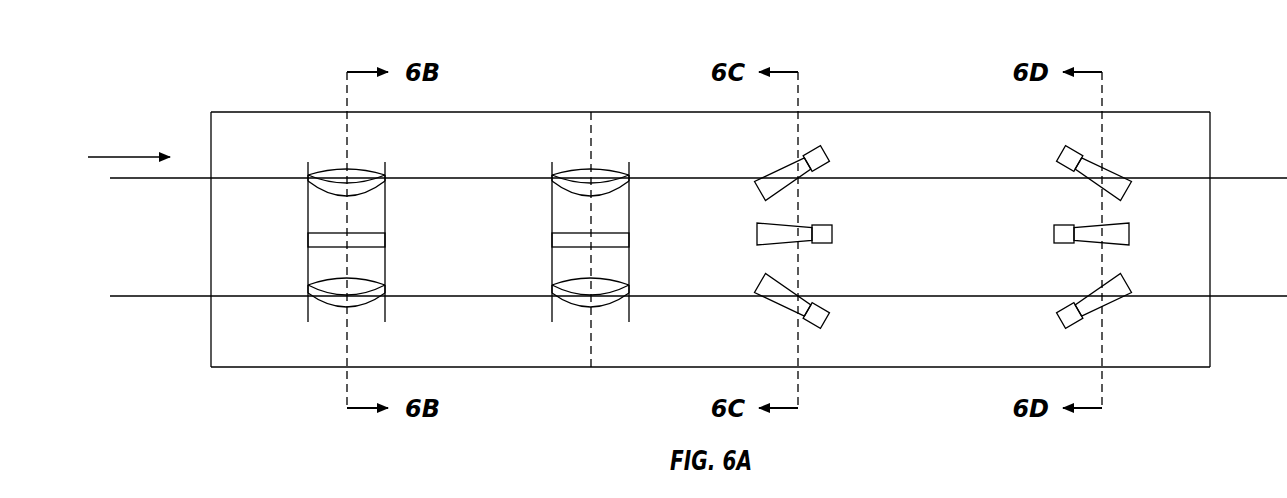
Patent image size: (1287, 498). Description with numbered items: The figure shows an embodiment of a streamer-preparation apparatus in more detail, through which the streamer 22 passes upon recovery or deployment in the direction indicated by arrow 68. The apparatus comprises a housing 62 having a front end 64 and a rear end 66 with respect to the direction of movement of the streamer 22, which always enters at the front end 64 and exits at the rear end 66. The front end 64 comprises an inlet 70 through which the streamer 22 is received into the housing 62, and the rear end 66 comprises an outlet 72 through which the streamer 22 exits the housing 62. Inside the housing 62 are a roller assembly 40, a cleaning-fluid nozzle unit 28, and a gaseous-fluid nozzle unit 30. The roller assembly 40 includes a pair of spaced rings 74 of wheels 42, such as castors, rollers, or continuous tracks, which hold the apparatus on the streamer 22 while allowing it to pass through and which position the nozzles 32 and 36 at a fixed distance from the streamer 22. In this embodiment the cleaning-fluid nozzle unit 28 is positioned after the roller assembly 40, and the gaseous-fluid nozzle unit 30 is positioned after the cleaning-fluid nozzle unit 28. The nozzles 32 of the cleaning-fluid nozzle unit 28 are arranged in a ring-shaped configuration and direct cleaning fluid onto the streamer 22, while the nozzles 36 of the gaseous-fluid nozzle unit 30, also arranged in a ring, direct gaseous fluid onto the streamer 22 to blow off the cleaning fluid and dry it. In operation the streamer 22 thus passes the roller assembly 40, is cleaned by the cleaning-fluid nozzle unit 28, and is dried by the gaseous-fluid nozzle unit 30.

The streamer 22 is at (158, 298).
The cleaning-fluid nozzle unit 28 is at (811, 206).
The gaseous-fluid nozzle unit 30 is at (1114, 205).
The nozzles 32 is at (782, 168).
The nozzles 36 is at (1093, 158).
The roller assembly 40 is at (356, 323).
The wheels 42 is at (366, 169).
The housing 62 is at (636, 111).
The front end 64 is at (210, 121).
The rear end 66 is at (1210, 110).
The arrow 68 is at (128, 155).
The inlet 70 is at (192, 236).
The outlet 72 is at (1221, 285).
The rings 74 is at (324, 325).